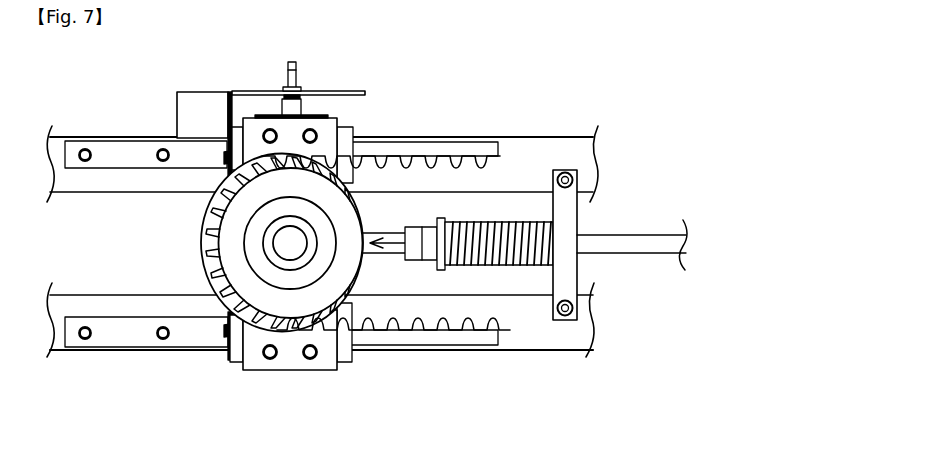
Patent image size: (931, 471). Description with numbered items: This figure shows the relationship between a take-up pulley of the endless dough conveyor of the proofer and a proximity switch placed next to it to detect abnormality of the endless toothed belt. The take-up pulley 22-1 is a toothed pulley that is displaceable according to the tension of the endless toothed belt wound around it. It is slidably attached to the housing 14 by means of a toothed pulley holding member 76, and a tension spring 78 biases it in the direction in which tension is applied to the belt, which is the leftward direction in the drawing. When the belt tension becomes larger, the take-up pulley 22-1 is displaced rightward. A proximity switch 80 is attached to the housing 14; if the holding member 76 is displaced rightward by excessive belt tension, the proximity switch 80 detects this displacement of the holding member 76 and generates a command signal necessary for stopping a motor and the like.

The housing 14 is at (94, 137).
The take-up pulley 22-1 is at (238, 273).
The toothed pulley holding member 76 is at (278, 370).
The tension spring 78 is at (521, 236).
The proximity switch 80 is at (297, 73).